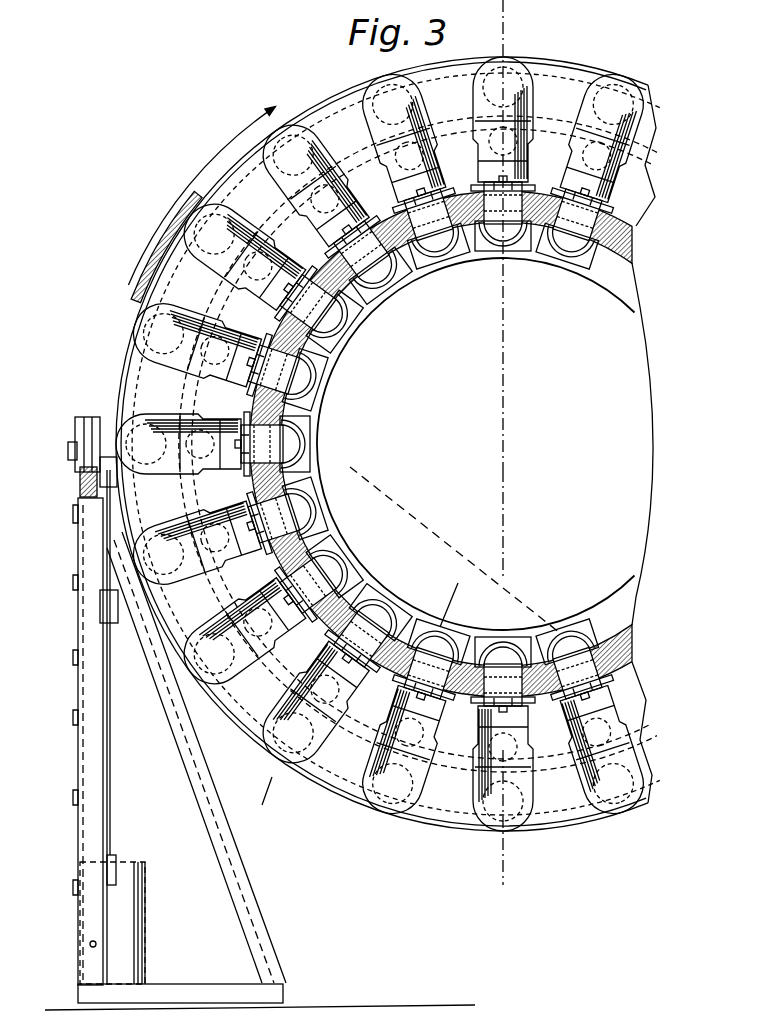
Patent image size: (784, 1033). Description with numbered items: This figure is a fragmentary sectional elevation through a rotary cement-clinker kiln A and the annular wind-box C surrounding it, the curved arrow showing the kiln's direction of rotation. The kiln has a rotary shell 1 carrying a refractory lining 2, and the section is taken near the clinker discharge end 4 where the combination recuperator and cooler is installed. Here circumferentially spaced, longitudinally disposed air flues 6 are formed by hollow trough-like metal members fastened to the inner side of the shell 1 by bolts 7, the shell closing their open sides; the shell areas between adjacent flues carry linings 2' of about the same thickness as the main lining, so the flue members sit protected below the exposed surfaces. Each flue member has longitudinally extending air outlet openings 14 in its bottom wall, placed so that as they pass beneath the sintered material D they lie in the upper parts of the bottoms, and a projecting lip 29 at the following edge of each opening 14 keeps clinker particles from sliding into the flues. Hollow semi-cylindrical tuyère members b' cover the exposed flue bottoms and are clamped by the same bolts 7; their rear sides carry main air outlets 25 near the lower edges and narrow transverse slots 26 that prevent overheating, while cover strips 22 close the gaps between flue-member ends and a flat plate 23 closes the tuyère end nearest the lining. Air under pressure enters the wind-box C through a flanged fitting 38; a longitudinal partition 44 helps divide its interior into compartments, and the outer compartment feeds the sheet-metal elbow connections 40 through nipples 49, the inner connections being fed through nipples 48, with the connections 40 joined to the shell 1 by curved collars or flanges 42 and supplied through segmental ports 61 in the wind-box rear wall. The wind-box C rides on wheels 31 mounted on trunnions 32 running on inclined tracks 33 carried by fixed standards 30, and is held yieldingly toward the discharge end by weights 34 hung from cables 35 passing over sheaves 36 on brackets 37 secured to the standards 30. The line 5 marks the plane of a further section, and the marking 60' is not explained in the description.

The kiln A is at (584, 58).
The annular wind-box C is at (325, 104).
The sintered material D is at (455, 550).
The rotary shell 1 is at (618, 228).
The lining 2 is at (411, 444).
The lining 2' is at (455, 448).
The clinker discharge end 4 is at (510, 25).
The section line 5- 5 is at (471, 603).
The air flues 6 is at (535, 258).
The bolts 7 is at (530, 215).
The air outlet openings 14 is at (450, 248).
The cover strips 22 is at (360, 312).
The flat plate 23 is at (495, 265).
The openings 25 is at (405, 222).
The narrow slots 26 is at (565, 262).
The projecting lip 29 is at (585, 250).
The frames or standards 30 is at (78, 715).
The wheels 31 is at (75, 430).
The studs or trunnions 32 is at (68, 450).
The tracks 33 is at (80, 485).
The weights 34 is at (90, 946).
The cables 35 is at (128, 755).
The sheaves 36 is at (118, 492).
The brackets 37 is at (105, 545).
The flanged fitting 38 is at (132, 300).
The elbows 40 is at (385, 110).
The collars or flanges 42 is at (332, 245).
The longitudinal partition 44 is at (190, 405).
The nipples 48 is at (570, 735).
The nipples 49 is at (393, 444).
The cam 60' is at (462, 743).
The segmental ports 61 is at (417, 746).
The tuyère members b' is at (497, 432).